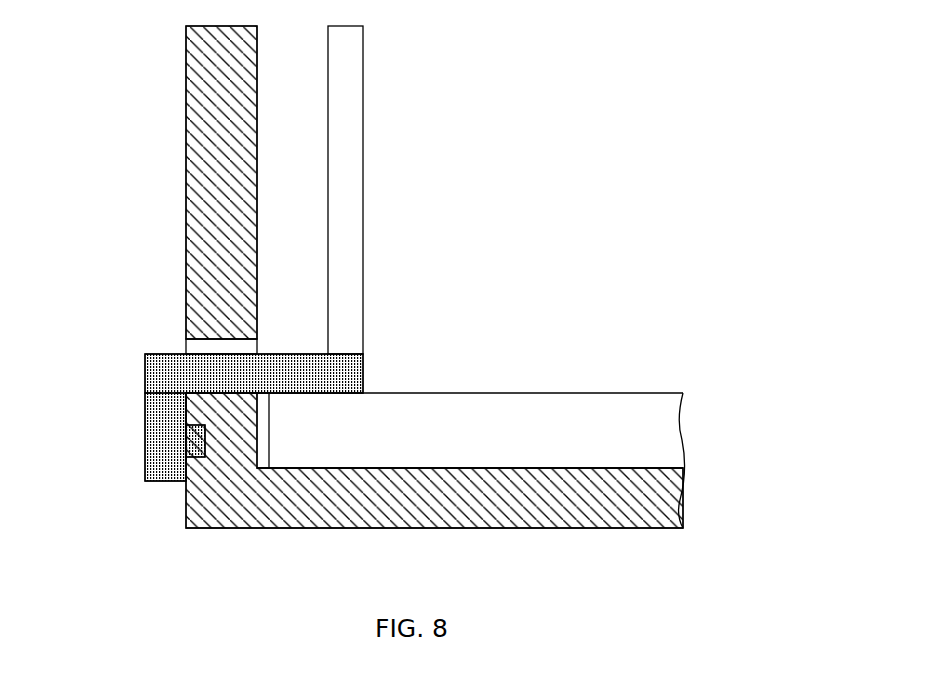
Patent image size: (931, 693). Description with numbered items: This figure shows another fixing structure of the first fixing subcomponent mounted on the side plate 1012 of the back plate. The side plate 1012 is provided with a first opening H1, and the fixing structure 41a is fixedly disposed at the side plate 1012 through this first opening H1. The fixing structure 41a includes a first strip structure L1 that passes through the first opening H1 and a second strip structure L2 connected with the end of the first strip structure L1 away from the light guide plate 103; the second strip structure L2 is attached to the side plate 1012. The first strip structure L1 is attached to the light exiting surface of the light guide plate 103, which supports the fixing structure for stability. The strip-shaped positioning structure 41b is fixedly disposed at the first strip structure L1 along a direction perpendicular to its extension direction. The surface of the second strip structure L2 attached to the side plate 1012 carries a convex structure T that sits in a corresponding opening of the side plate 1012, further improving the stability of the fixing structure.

The side plate 1012 is at (183, 138).
The positioning structure 41b is at (378, 144).
The first opening H1 is at (172, 346).
The fixing structure 41a is at (204, 417).
The light guide plate 103 is at (696, 428).
The convex structure T is at (198, 471).
The first strip structure L1 is at (254, 373).
The second strip structure L2 is at (165, 437).